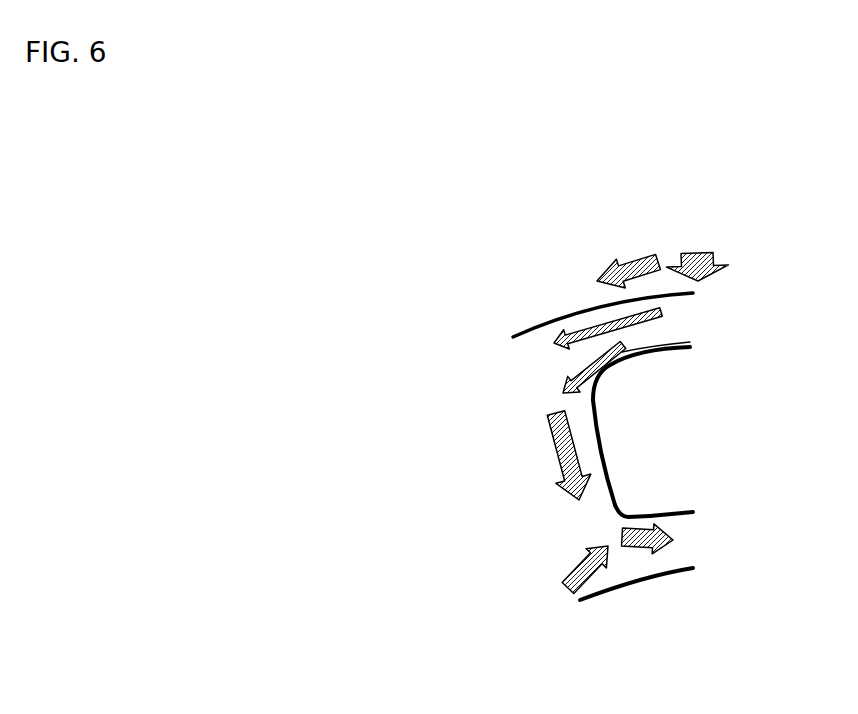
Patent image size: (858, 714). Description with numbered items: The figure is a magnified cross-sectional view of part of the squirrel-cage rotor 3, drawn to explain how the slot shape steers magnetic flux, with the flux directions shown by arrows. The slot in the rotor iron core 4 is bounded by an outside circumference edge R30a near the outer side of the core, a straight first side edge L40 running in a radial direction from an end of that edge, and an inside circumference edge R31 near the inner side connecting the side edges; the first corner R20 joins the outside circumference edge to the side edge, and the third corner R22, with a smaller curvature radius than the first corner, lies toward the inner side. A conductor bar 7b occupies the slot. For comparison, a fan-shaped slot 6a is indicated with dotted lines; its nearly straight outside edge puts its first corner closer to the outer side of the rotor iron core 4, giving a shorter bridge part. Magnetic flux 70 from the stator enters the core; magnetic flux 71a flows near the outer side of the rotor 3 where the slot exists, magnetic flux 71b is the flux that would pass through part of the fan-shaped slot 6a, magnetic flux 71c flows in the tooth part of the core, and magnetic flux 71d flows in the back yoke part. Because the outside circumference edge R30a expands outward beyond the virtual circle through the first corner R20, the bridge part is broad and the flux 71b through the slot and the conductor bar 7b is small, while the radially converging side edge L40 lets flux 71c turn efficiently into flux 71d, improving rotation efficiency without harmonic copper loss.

The rotor 3 is at (448, 271).
The rotor iron core 4 is at (538, 329).
The fan-shaped slot 6a is at (590, 356).
The magnetic flux 70 is at (637, 247).
The magnetic flux 71a is at (663, 310).
The magnetic flux 71b is at (628, 367).
The magnetic flux 71c is at (583, 488).
The magnetic flux 71d is at (640, 545).
The conductor bar 7b is at (661, 469).
The first corner R20 is at (588, 389).
The third corner R22 is at (619, 521).
The outside circumference edge R30a is at (643, 353).
The inside circumference edge R31 is at (678, 516).
The first side edge L40 is at (597, 445).